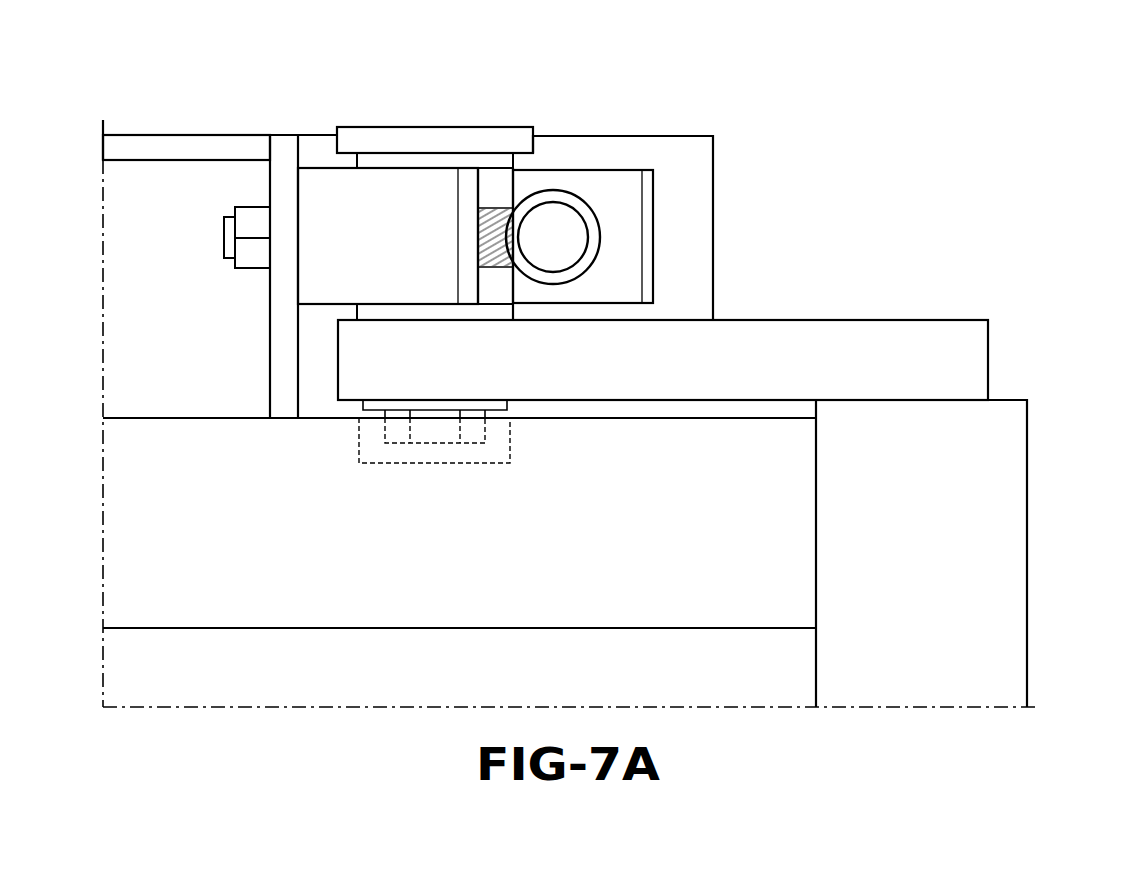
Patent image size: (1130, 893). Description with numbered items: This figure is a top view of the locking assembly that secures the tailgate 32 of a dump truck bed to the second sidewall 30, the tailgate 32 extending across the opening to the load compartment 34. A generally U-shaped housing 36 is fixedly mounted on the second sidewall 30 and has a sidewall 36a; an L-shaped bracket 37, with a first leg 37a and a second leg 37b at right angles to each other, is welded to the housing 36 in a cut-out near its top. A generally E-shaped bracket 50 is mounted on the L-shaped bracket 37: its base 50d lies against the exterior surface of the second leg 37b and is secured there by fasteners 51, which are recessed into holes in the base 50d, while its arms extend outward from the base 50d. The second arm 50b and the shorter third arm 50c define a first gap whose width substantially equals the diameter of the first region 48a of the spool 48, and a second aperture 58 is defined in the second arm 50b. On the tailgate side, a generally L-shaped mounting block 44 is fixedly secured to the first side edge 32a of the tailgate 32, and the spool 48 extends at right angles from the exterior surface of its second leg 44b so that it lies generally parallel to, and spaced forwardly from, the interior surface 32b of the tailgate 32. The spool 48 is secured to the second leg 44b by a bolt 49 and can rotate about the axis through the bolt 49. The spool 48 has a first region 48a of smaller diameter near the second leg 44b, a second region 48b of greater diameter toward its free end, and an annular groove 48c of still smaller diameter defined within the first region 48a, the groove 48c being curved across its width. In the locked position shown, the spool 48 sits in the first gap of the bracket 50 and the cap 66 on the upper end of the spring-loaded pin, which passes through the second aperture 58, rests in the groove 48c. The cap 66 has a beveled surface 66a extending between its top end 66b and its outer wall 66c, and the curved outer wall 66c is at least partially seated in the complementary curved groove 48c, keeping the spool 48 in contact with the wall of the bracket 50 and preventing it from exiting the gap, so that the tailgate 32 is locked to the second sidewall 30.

The second sidewall 30 is at (162, 420).
The tailgate 32 is at (1022, 600).
The first side edge 32a is at (1007, 400).
The interior surface 32b is at (816, 666).
The compartment 34 is at (357, 675).
The housing 36 is at (155, 135).
The sidewall 36a is at (195, 135).
The L-shaped bracket 37 is at (676, 134).
The first leg 37a is at (690, 167).
The second leg 37b is at (272, 378).
The mounting block 44 is at (900, 320).
The second leg 44b is at (748, 322).
The spool 48 is at (352, 127).
The first region 48a is at (493, 180).
The second region 48b is at (400, 140).
The annular groove 48c is at (517, 233).
The bolt 49 is at (436, 432).
The E-shaped bracket 50 is at (583, 172).
The second arm 50b is at (608, 180).
The third arm 50c is at (447, 190).
The base 50d is at (298, 272).
The fasteners 51 is at (228, 237).
The second aperture 58 is at (540, 283).
The cap 66 is at (602, 232).
The beveled surface 66a is at (592, 216).
The top end 66b is at (575, 242).
The outer wall 66c is at (505, 235).